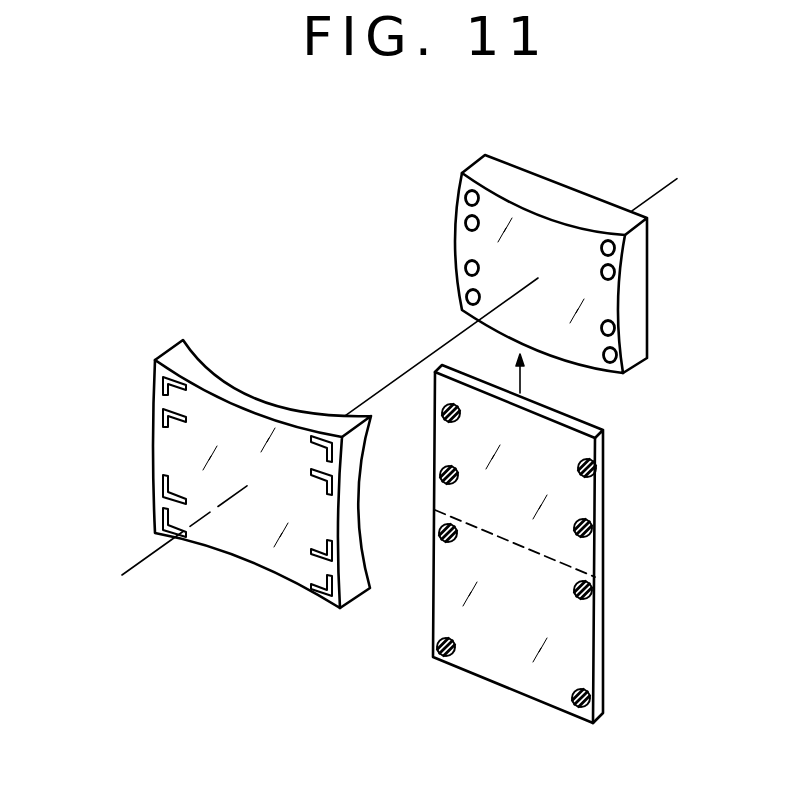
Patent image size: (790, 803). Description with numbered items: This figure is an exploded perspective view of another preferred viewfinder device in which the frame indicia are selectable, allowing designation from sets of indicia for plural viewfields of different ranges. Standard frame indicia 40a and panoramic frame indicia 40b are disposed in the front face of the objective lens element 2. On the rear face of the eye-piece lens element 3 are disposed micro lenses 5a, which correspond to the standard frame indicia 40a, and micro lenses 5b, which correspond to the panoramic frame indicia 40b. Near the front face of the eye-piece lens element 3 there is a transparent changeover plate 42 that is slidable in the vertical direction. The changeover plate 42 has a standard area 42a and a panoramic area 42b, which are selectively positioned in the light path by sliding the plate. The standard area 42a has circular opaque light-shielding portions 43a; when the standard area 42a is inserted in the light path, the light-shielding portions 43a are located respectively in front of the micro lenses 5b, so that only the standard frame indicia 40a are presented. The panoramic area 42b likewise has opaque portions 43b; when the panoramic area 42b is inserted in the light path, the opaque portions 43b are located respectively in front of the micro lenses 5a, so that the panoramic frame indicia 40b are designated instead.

The objective lens element 2 is at (220, 562).
The eye-piece lens element 3 is at (582, 192).
The micro lenses 5a is at (465, 197).
The micro lenses 5b is at (466, 268).
The standard frame indicia 40a is at (157, 377).
The panoramic frame indicia 40b is at (165, 480).
The changeover plate 42 is at (612, 645).
The standard area 42a is at (573, 428).
The panoramic area 42b is at (513, 678).
The light-shielding portions 43a is at (440, 472).
The opaque portions 43b is at (591, 590).